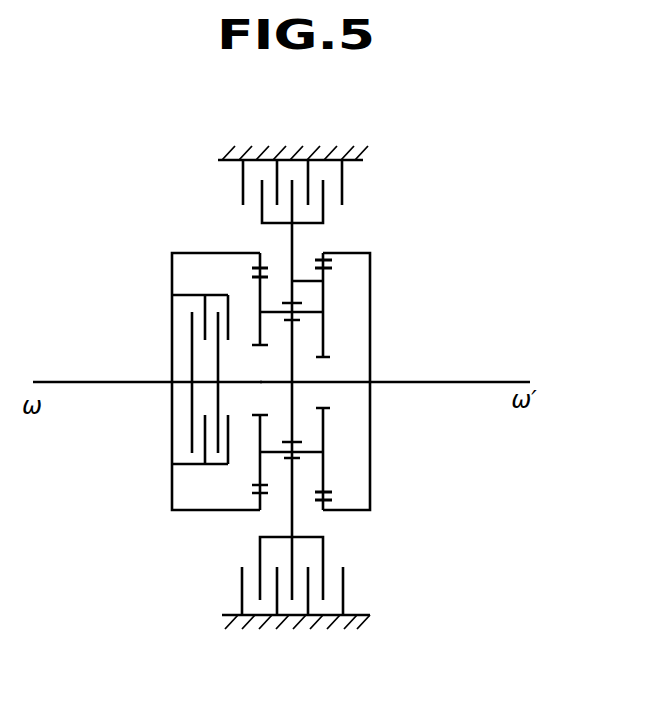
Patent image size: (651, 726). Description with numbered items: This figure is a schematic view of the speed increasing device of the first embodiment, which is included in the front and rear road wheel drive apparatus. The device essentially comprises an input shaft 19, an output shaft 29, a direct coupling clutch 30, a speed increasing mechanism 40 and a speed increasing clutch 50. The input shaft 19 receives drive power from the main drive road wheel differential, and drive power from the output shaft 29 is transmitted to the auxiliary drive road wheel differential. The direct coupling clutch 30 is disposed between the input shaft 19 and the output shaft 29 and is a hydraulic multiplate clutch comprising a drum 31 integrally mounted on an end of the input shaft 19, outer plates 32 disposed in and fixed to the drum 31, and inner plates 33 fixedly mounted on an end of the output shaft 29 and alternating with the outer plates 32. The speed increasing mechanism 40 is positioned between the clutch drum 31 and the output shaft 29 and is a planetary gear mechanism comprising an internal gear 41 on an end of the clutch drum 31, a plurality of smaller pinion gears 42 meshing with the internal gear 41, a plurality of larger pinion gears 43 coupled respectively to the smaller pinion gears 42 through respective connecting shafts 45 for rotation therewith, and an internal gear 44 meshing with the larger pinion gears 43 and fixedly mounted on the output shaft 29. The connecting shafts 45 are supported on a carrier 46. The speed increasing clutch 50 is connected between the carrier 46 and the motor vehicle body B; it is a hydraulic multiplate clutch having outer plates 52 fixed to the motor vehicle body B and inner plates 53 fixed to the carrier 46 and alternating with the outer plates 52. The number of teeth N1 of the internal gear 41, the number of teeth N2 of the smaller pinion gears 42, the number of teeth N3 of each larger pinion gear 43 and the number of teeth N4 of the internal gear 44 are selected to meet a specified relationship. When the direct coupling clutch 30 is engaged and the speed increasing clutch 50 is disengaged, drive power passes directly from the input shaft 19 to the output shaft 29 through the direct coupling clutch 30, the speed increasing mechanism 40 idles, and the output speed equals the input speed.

The input shaft 19 is at (60, 382).
The output shaft 29 is at (468, 382).
The direct coupling clutch 30 is at (165, 403).
The drum 31 is at (172, 264).
The outer plates 32 is at (205, 330).
The inner plates 33 is at (218, 433).
The speed increasing mechanism 40 is at (386, 398).
The internal gear 41 is at (264, 264).
The smaller pinion gears 42 is at (260, 298).
The larger pinion gears 43 is at (323, 297).
The internal gear 44 is at (316, 503).
The connecting shafts 45 is at (313, 320).
The carrier 46 is at (323, 281).
The speed increasing clutch 50 is at (359, 181).
The outer plates 52 is at (277, 180).
The inner plates 53 is at (323, 588).
The motor vehicle body B is at (288, 625).
The number of teeth of the internal gear N1 is at (270, 527).
The number of teeth of the smaller pinion gears N2 is at (250, 370).
The number of teeth of the larger pinion gears N3 is at (348, 402).
The number of teeth of the internal gear N4 is at (318, 244).